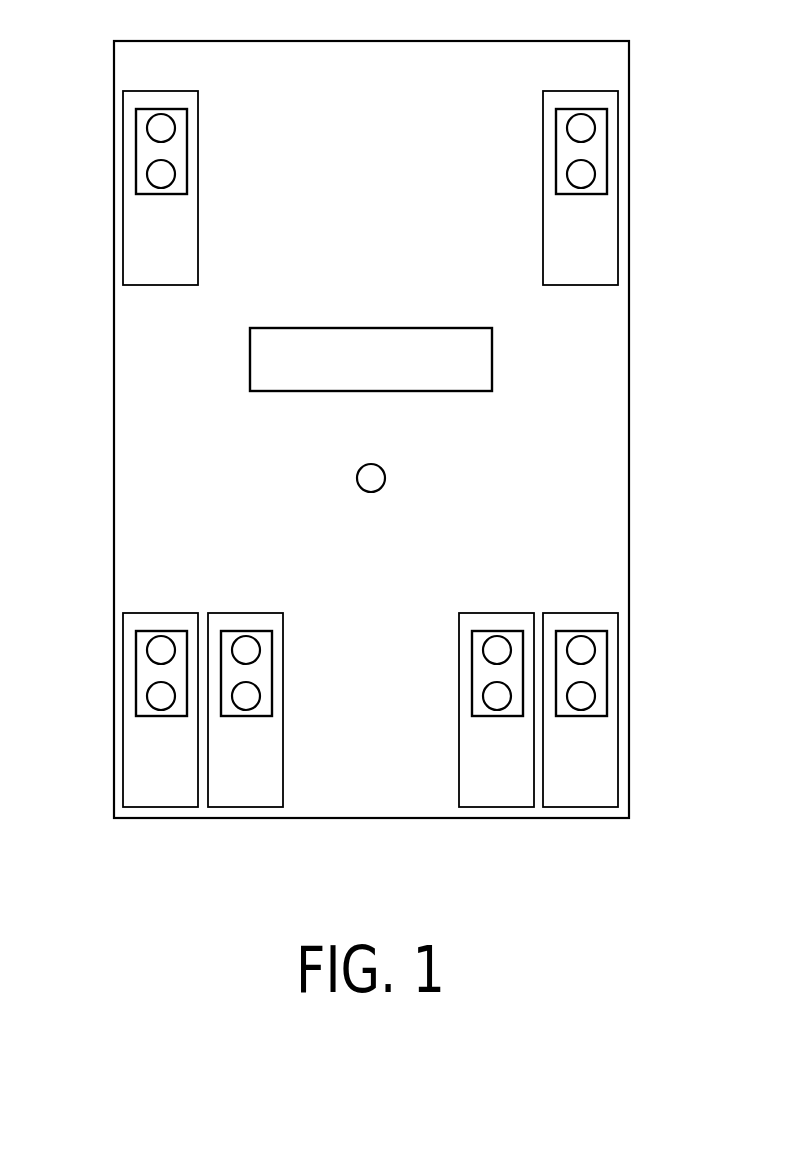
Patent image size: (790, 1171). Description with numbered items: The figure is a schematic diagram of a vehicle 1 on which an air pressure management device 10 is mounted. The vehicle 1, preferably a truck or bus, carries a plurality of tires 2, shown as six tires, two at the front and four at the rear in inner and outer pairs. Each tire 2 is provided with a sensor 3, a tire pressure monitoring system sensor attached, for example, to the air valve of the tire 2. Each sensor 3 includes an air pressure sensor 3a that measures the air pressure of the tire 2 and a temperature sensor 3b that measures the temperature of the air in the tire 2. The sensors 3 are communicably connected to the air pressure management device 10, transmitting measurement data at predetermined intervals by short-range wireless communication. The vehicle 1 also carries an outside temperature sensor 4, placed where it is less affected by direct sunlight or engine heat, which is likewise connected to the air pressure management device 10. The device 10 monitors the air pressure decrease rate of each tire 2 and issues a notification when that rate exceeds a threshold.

The vehicle 1 is at (560, 41).
The tire 2 is at (123, 237).
The sensor 3 is at (136, 184).
The air pressure sensor 3a is at (147, 128).
The temperature sensor 3b is at (147, 174).
The outside temperature sensor 4 is at (385, 479).
The air pressure management device 10 is at (423, 328).